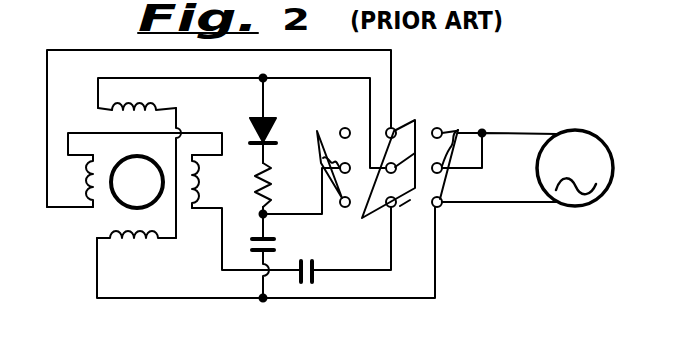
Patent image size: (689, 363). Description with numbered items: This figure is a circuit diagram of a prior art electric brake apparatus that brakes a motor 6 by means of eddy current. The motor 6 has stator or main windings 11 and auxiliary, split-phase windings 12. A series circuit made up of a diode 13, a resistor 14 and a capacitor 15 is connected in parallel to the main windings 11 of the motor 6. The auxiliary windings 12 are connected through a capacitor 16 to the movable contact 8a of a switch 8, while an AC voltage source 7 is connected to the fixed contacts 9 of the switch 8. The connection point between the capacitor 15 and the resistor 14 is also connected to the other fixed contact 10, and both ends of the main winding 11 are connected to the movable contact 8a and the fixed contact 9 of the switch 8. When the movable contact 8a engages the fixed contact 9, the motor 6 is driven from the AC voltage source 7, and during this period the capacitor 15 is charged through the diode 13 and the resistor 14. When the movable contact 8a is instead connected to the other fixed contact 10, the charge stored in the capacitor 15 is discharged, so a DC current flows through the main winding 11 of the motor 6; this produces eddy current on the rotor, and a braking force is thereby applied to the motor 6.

The motor 6 is at (110, 212).
The AC voltage source 7 is at (577, 129).
The switch 8 is at (435, 97).
The movable contact 8a is at (405, 201).
The fixed contacts 9 is at (459, 131).
The other fixed contact 10 is at (340, 133).
The main windings 11 is at (113, 112).
The auxiliary (split-phase) windings 12 is at (80, 197).
The diode 13 is at (252, 121).
The resistor 14 is at (274, 184).
The capacitor 15 is at (276, 241).
The capacitor 16 is at (312, 284).